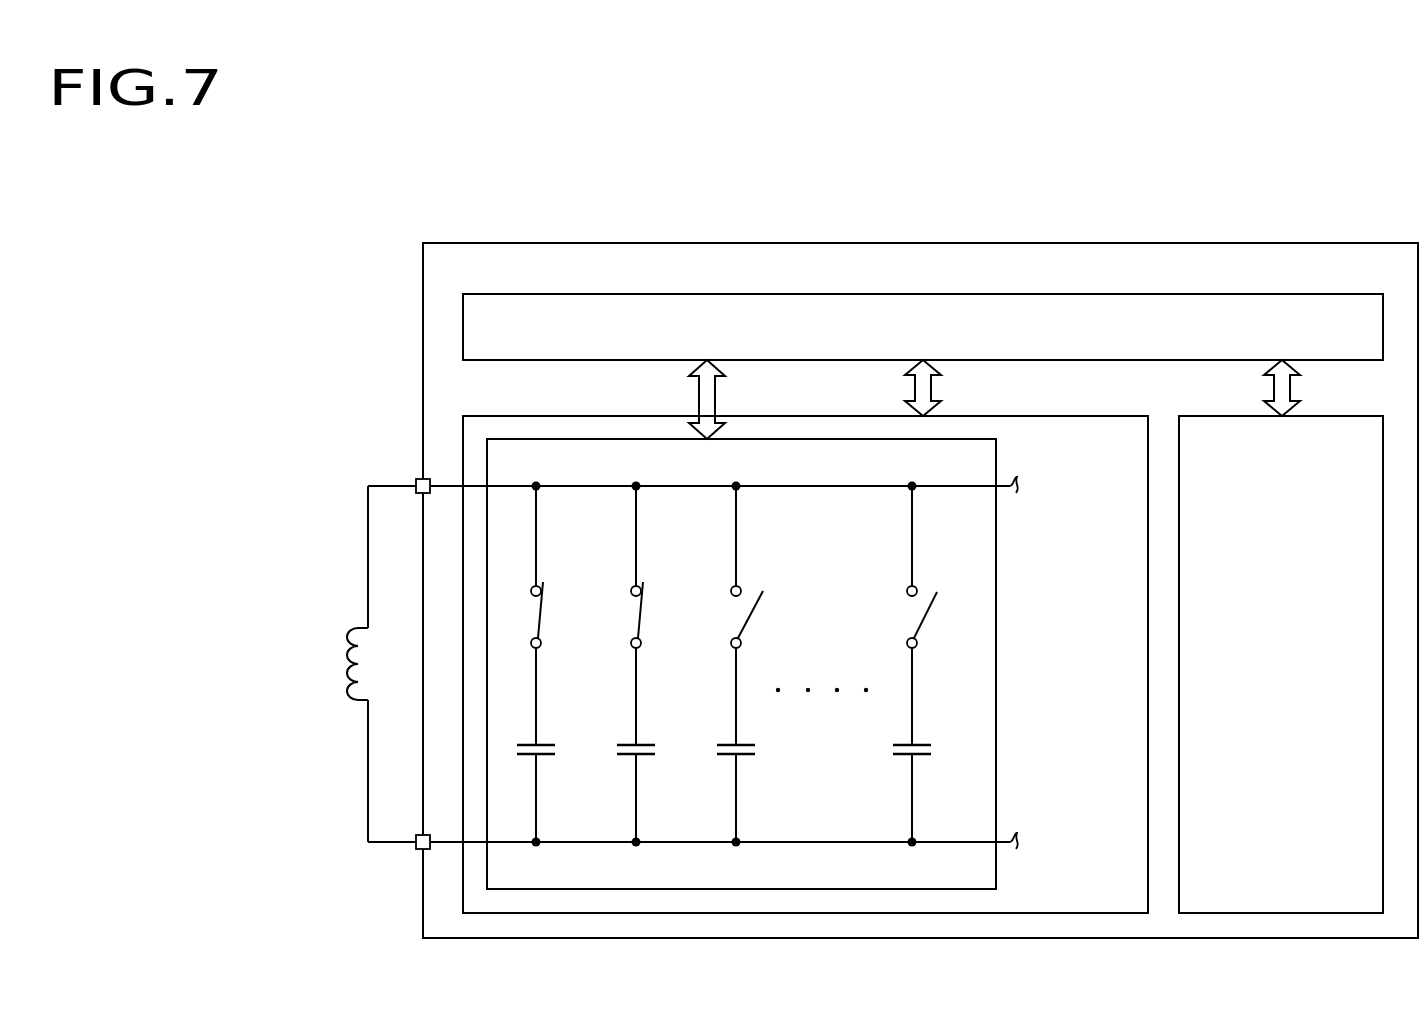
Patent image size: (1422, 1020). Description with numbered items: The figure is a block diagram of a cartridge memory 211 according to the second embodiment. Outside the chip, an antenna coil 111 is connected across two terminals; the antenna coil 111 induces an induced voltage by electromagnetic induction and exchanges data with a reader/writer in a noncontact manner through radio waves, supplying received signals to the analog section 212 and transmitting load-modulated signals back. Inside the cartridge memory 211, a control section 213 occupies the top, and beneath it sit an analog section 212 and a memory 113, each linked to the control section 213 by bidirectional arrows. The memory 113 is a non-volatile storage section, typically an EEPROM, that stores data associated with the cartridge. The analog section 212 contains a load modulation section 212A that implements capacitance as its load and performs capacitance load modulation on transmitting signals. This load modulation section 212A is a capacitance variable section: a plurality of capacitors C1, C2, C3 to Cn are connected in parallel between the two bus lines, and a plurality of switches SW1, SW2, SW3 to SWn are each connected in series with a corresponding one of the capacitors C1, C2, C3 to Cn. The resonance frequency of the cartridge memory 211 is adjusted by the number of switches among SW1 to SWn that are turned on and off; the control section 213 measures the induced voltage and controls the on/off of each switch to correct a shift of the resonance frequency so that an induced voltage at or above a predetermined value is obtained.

The cartridge memory 211 is at (1156, 167).
The control section 213 is at (1167, 297).
The analog section 212 is at (1050, 414).
The load modulation section 212A is at (726, 664).
The memory 113 is at (1328, 414).
The antenna coil 111 is at (333, 675).
The switch SW1 is at (541, 617).
The switch SW2 is at (641, 617).
The switch SW3 is at (748, 617).
The switch SWn is at (923, 617).
The capacitor C1 is at (553, 750).
The capacitor C2 is at (653, 750).
The capacitor C3 is at (753, 750).
The capacitor Cn is at (929, 750).